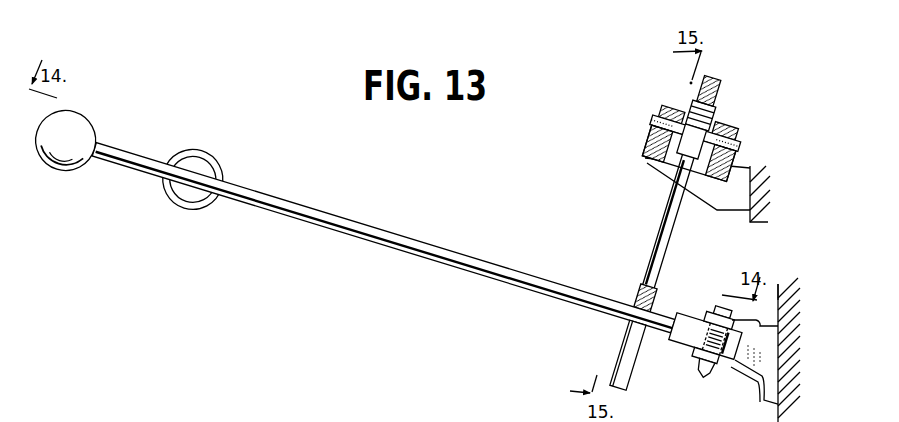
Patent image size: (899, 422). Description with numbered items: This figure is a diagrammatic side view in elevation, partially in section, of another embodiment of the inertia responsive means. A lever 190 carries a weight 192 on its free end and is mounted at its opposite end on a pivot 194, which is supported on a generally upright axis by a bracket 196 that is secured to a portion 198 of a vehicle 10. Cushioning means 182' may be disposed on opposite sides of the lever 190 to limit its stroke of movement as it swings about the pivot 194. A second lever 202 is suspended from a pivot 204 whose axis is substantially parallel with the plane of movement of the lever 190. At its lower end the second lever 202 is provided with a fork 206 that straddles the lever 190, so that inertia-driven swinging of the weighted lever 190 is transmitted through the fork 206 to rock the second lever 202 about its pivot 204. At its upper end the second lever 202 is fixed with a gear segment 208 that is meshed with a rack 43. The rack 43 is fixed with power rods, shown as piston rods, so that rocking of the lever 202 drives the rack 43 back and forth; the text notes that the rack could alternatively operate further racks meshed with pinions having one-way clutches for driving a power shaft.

The vehicle 10 is at (764, 229).
The rack 43 is at (717, 91).
The cushioning means 182' is at (187, 192).
The lever 190 is at (467, 256).
The weight 192 is at (81, 170).
The pivot 194 is at (705, 380).
The bracket 196 is at (760, 365).
The portion of vehicle 198 is at (790, 302).
The second lever 202 is at (654, 253).
The pivot 204 is at (737, 136).
The fork 206 is at (619, 355).
The gear segment 208 is at (689, 109).